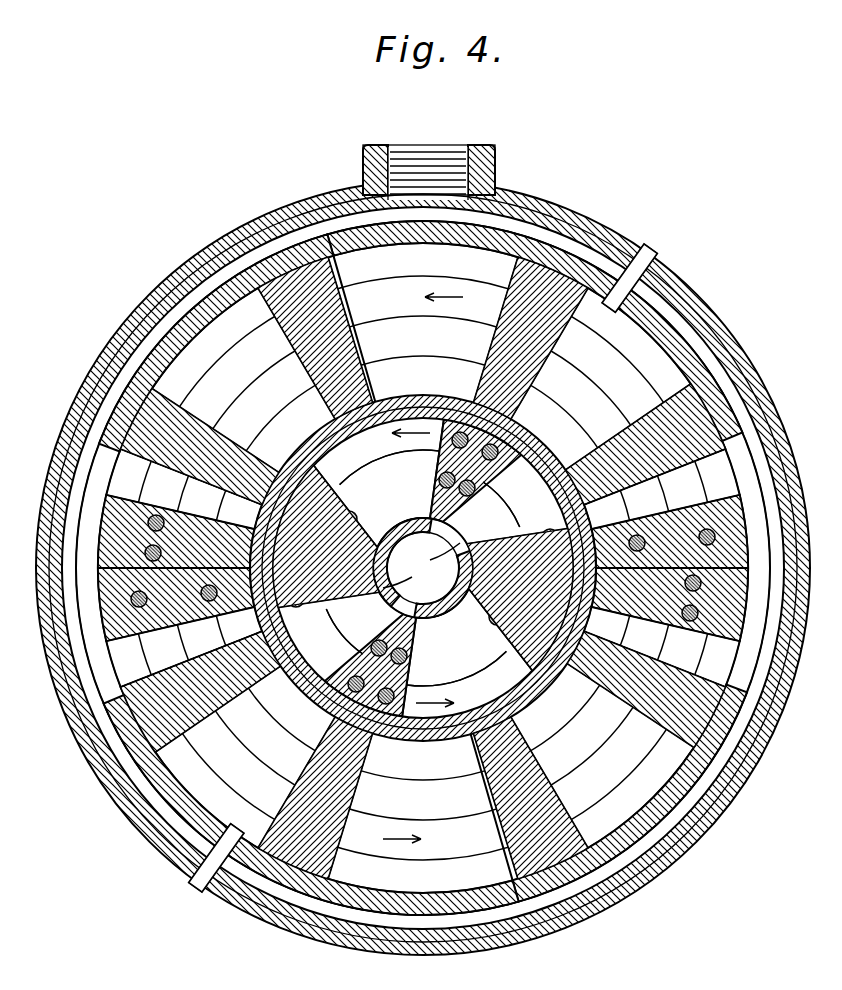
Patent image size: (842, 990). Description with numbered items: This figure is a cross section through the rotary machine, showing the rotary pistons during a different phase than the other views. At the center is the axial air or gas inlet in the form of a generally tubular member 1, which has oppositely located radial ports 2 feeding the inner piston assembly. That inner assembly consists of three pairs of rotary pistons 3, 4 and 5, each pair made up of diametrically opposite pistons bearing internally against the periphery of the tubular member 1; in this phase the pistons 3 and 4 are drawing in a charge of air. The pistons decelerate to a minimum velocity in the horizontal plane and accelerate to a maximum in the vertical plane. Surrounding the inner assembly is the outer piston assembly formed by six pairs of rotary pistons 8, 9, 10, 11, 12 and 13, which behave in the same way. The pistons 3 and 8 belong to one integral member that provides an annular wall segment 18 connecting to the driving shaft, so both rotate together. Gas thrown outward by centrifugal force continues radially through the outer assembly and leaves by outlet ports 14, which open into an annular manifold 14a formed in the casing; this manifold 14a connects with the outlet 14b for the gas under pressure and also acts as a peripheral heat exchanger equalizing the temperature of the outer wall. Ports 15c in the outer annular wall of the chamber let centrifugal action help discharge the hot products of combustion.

The tubular member 1 is at (410, 515).
The radial ports 2 is at (460, 543).
The rotary piston 3 is at (473, 460).
The rotary piston 4 is at (513, 533).
The rotary piston 5 is at (335, 493).
The rotary piston 8 is at (548, 318).
The rotary piston 9 is at (650, 430).
The rotary piston 10 is at (690, 512).
The rotary piston 11 is at (717, 620).
The rotary piston 12 is at (635, 687).
The rotary piston 13 is at (523, 777).
The outlet ports 14 is at (95, 500).
The annular manifold 14a is at (278, 243).
The outlet 14b is at (455, 160).
The ports 15c is at (648, 265).
The annular wall segment 18 is at (545, 443).